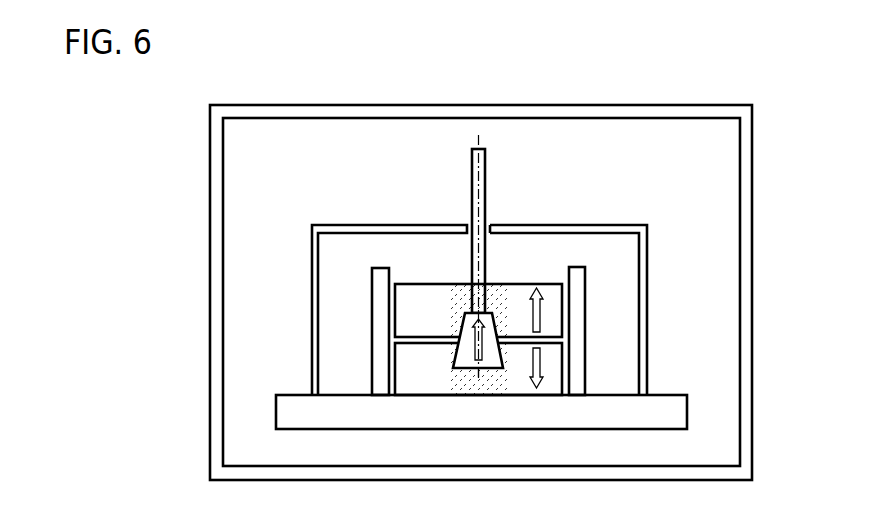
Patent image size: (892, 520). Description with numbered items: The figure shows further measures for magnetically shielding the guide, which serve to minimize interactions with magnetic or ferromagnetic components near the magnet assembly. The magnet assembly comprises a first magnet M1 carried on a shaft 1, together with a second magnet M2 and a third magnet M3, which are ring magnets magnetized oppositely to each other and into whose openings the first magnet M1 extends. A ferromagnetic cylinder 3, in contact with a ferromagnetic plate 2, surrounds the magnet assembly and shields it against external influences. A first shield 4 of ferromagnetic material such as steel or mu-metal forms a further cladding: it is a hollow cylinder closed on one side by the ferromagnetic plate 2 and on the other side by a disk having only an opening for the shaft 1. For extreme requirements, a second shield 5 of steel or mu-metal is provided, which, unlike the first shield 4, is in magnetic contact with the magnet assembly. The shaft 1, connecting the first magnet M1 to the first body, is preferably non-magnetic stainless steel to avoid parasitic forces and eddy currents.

The shaft 1 is at (478, 197).
The ferromagnetic plate 2 is at (677, 413).
The ferromagnetic cylinder 3 is at (373, 296).
The first shield 4 is at (648, 255).
The second shield 5 is at (750, 174).
The first magnet M1 is at (465, 356).
The second magnet M2 is at (553, 378).
The third magnet M3 is at (550, 300).